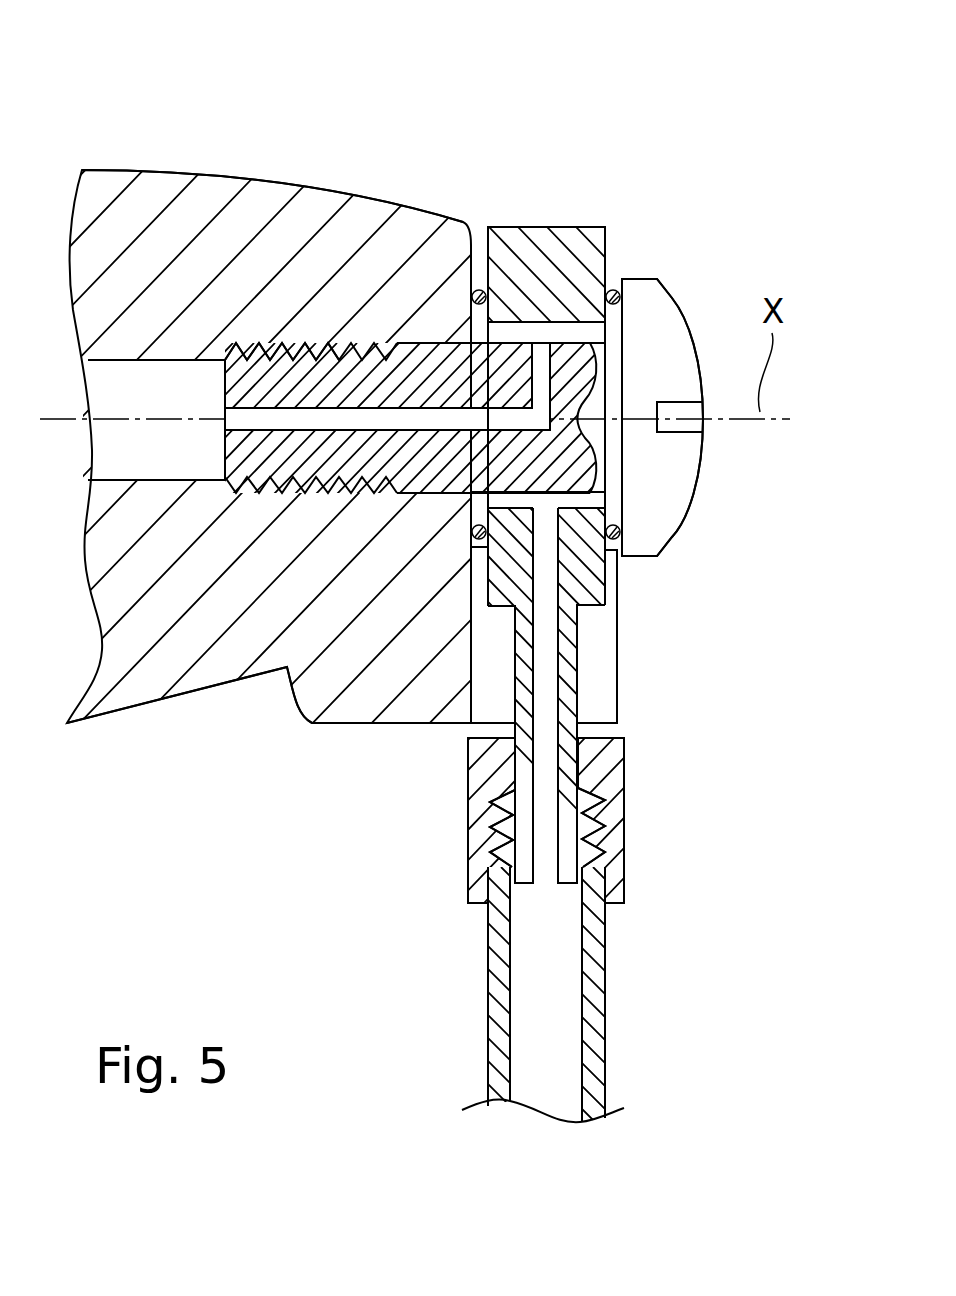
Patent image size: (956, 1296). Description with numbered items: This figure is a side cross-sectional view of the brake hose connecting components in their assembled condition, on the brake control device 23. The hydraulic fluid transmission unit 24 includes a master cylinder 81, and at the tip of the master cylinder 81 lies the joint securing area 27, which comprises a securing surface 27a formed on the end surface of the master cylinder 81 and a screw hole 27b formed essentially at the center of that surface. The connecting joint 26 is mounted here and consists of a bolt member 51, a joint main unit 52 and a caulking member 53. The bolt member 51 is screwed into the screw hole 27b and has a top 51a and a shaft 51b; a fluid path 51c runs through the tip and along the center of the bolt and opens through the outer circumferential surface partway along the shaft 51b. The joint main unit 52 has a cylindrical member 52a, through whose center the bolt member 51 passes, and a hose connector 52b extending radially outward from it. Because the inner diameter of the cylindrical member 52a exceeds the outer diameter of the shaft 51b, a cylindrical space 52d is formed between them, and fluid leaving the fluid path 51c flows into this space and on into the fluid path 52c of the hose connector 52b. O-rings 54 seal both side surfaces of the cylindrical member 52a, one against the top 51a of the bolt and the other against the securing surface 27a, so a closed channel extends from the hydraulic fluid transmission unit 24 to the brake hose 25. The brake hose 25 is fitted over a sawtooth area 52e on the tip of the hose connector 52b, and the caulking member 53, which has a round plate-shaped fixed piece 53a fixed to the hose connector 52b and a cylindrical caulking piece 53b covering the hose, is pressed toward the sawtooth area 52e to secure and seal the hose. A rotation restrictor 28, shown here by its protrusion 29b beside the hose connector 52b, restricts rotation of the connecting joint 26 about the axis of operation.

The brake control device 23 is at (159, 742).
The hydraulic fluid transmission unit 24 is at (137, 215).
The brake hose 25 is at (597, 981).
The connecting joint 26 is at (579, 210).
The joint securing area 27 is at (475, 74).
The securing surface 27a is at (478, 245).
The screw hole 27b is at (335, 343).
The rotation restrictor 28 is at (597, 712).
The protrusion 29b is at (596, 683).
The bolt member 51 is at (657, 315).
The top of the bolt member 51a is at (675, 320).
The shaft 51b is at (420, 343).
The fluid path 51c is at (338, 436).
The joint main unit 52 is at (532, 264).
The cylindrical member 52a is at (577, 247).
The hose connector 52b is at (565, 632).
The fluid path 52c is at (556, 566).
The cylindrical space 52d is at (521, 498).
The sawtooth area 52e is at (600, 840).
The caulking member 53 is at (618, 798).
The fixed piece 53a is at (620, 758).
The caulking piece 53b is at (617, 884).
The O-ring 54 is at (478, 289).
The master cylinder 81 is at (180, 217).